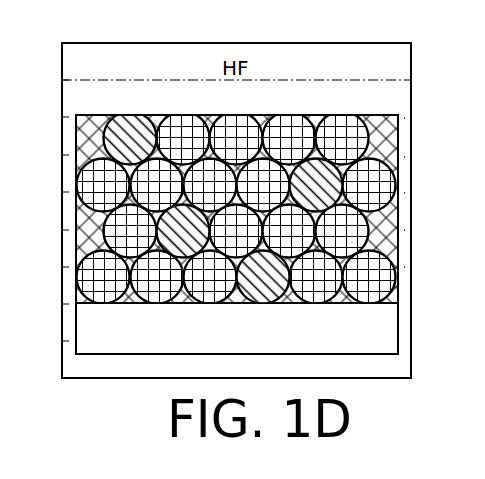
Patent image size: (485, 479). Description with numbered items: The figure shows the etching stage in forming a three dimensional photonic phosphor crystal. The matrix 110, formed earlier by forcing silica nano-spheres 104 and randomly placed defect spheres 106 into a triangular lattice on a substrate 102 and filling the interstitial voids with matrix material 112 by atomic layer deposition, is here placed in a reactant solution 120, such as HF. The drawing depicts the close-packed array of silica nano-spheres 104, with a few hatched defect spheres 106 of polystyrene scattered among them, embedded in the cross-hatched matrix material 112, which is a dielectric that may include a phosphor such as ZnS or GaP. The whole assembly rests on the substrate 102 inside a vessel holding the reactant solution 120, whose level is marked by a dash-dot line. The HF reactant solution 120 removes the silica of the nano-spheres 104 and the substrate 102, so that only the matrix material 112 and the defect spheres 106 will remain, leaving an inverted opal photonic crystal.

The reactant solution 120 is at (98, 55).
The substrate 102 is at (255, 337).
The silica nano-spheres 104 is at (240, 116).
The defect spheres 106 is at (131, 114).
The matrix 110 is at (343, 108).
The matrix material 112 is at (316, 117).